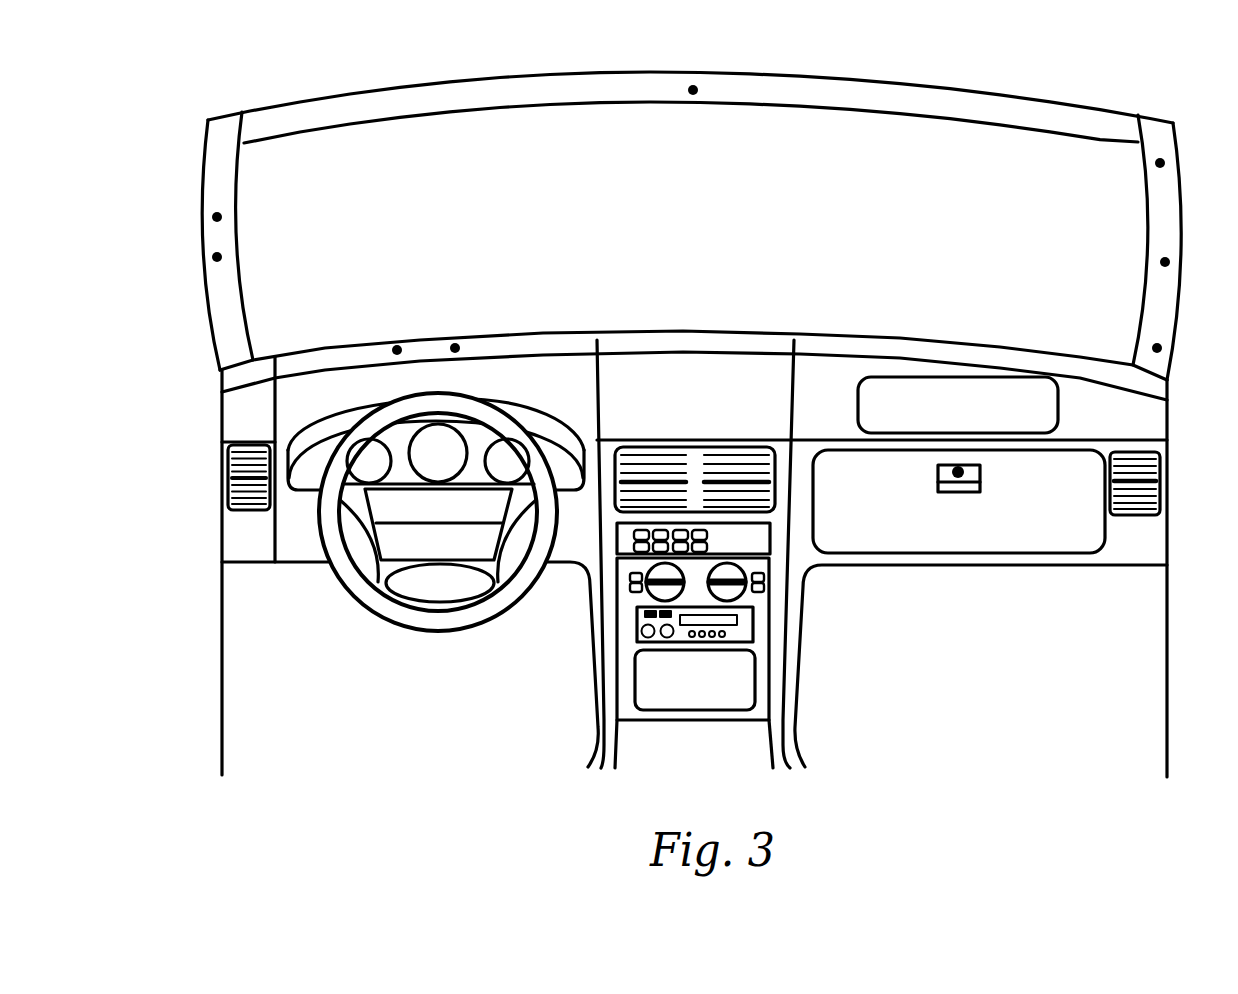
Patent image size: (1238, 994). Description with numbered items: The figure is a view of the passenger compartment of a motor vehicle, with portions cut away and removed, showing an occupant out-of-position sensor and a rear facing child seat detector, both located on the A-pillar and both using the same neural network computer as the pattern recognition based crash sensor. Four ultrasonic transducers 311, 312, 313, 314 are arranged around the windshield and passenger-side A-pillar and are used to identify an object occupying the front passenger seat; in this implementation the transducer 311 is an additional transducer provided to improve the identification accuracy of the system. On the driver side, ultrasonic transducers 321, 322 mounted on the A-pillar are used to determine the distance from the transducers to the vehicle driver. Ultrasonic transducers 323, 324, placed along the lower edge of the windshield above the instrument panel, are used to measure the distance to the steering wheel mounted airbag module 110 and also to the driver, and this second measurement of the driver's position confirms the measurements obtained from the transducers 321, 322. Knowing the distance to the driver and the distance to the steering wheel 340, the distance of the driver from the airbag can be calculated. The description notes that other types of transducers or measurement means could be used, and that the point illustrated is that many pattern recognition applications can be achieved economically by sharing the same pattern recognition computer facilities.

The steering wheel mounted airbag module 110 is at (433, 544).
The steering wheel 340 is at (457, 617).
The ultrasonic transducer 311 is at (692, 92).
The ultrasonic transducer 312 is at (1160, 164).
The ultrasonic transducer 313 is at (1160, 262).
The ultrasonic transducer 314 is at (1152, 349).
The ultrasonic transducer 321 is at (212, 217).
The ultrasonic transducer 322 is at (222, 256).
The ultrasonic transducer 323 is at (396, 347).
The ultrasonic transducer 324 is at (456, 347).